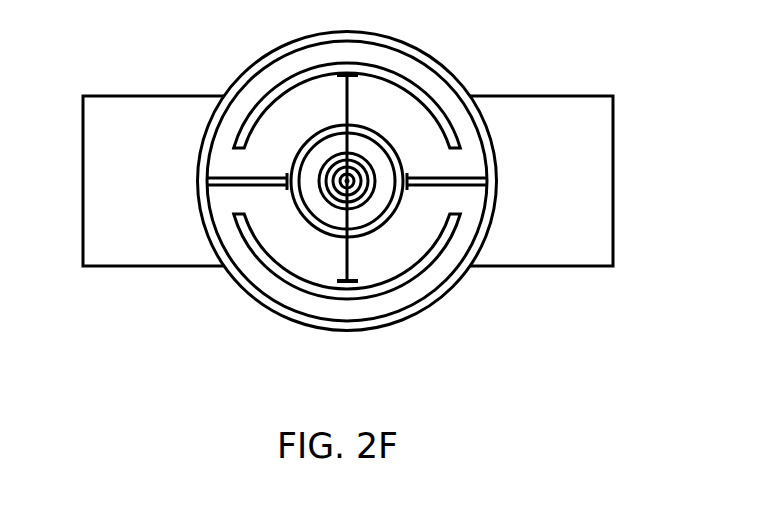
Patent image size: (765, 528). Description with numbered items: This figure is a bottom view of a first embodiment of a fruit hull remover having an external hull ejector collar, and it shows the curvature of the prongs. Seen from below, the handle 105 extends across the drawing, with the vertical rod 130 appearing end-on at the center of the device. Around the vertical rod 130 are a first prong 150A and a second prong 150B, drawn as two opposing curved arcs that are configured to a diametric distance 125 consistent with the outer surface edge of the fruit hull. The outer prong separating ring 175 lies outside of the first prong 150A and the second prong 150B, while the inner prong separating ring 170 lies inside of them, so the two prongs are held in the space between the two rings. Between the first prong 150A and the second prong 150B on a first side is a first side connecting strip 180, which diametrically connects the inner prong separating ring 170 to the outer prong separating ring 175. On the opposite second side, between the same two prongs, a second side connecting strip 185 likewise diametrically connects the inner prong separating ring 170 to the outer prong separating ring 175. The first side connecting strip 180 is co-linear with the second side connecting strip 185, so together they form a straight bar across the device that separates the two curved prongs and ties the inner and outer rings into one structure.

The handle 105 is at (348, 181).
The diametric distance 125 is at (332, 119).
The vertical rod 130 is at (388, 171).
The first of an at least one prong 150A is at (238, 135).
The second of an at least one prong 150B is at (236, 272).
The inner prong separating ring 170 is at (400, 142).
The outer prong separating ring 175 is at (492, 148).
The first side connecting strip 180 is at (269, 235).
The second side connecting strip 185 is at (465, 233).